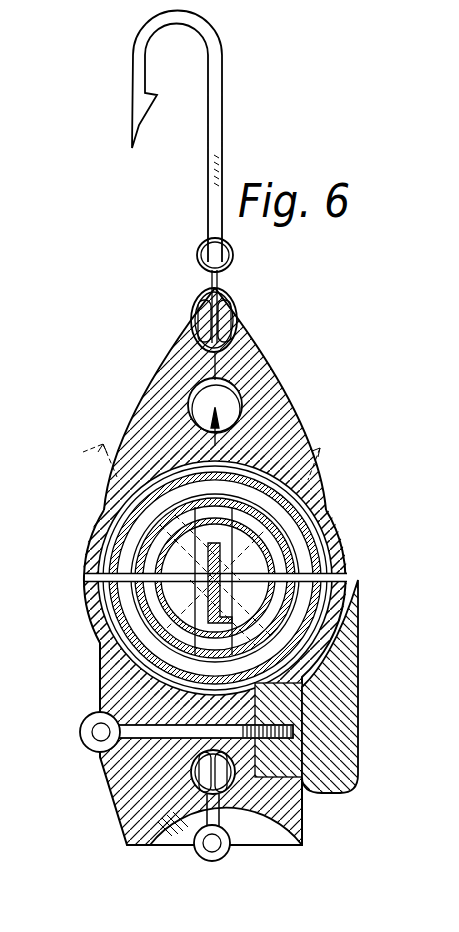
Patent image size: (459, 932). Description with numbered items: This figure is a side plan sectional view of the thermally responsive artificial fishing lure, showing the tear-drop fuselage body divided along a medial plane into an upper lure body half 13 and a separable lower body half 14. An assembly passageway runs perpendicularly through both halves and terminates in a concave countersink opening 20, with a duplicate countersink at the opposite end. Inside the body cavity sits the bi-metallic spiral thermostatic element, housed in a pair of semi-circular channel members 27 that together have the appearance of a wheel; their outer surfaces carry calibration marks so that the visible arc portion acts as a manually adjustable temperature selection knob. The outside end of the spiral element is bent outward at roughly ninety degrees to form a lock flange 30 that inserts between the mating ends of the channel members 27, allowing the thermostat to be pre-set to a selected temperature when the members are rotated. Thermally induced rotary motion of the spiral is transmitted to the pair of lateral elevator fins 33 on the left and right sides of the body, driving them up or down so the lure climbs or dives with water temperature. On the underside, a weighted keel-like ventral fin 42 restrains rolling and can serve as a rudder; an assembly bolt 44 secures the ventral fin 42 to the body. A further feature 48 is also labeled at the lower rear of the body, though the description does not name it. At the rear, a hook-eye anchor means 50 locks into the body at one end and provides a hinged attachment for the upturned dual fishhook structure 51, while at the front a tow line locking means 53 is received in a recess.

The upper lure body half 13 is at (147, 393).
The lower body half 14 is at (284, 393).
The concave countersink opening 20 is at (100, 698).
The semi-circular channel member 27 is at (103, 510).
The lock flange 30 is at (86, 578).
The lateral elevator fin 33 is at (185, 544).
The ventral fin 42 is at (320, 795).
The assembly bolt 44 is at (80, 733).
The recess 48 is at (244, 836).
The hook-eye anchor means 50 is at (204, 247).
The upturned dual fishhook structure 51 is at (208, 67).
The tow line locking means 53 is at (211, 866).